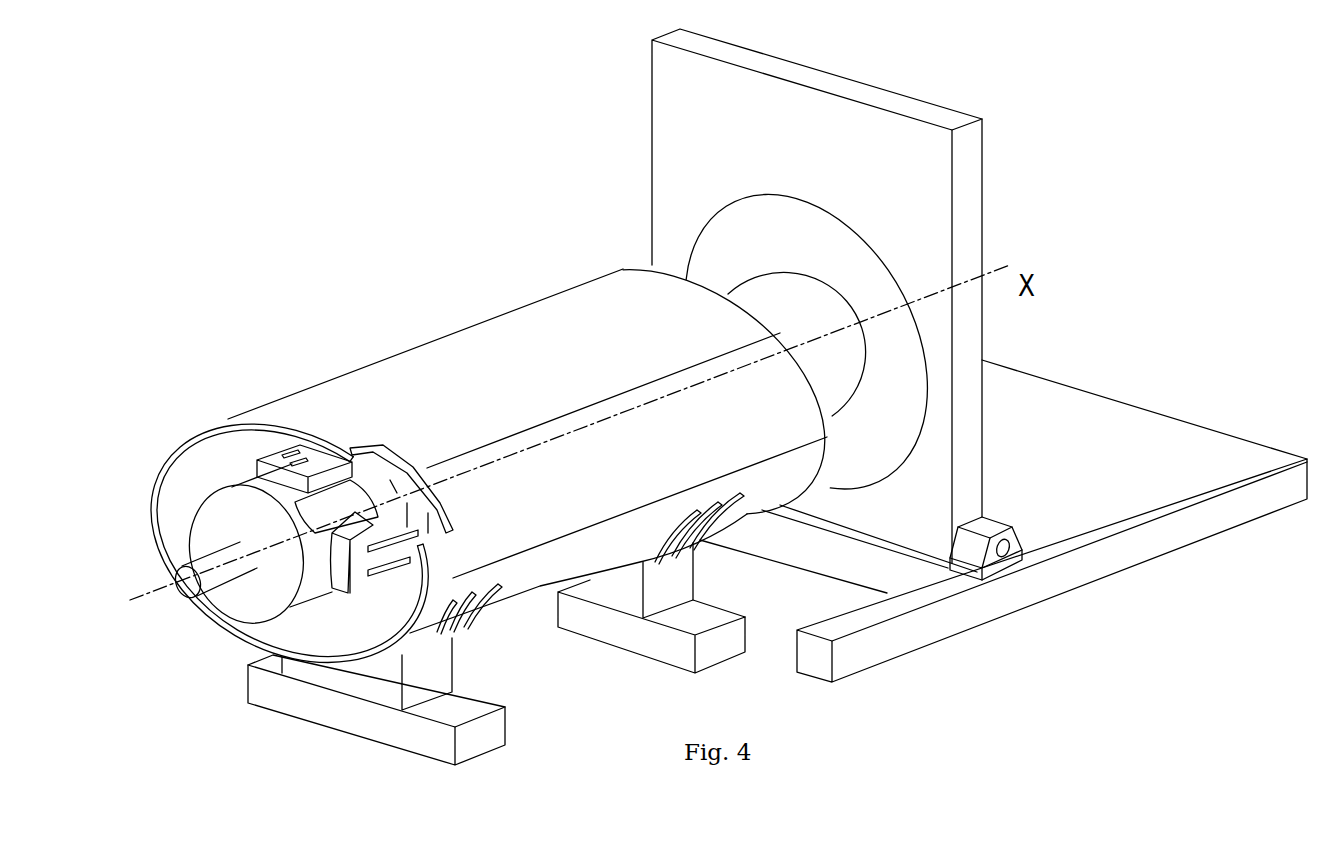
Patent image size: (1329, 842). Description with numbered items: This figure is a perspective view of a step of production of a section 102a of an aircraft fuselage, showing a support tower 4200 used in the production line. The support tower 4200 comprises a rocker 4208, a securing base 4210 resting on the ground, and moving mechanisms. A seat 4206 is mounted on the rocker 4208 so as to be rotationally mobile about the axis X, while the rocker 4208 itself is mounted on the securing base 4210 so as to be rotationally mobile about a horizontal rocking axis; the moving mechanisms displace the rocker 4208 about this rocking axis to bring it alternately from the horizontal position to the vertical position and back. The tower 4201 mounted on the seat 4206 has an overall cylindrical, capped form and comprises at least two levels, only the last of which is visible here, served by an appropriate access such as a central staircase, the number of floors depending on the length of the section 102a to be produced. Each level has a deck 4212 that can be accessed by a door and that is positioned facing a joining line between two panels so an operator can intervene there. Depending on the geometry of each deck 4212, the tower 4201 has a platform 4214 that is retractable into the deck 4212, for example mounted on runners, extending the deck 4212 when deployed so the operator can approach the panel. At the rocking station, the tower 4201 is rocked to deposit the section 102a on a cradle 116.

The support tower 4200 is at (232, 300).
The tower 4201 is at (242, 515).
The deck 4212 is at (364, 480).
The platform 4214 is at (405, 487).
The section of a fuselage 102a is at (640, 344).
The seat 4206 is at (742, 237).
The rocker 4208 is at (912, 160).
The securing base 4210 is at (1126, 466).
The cradle 116 is at (635, 632).